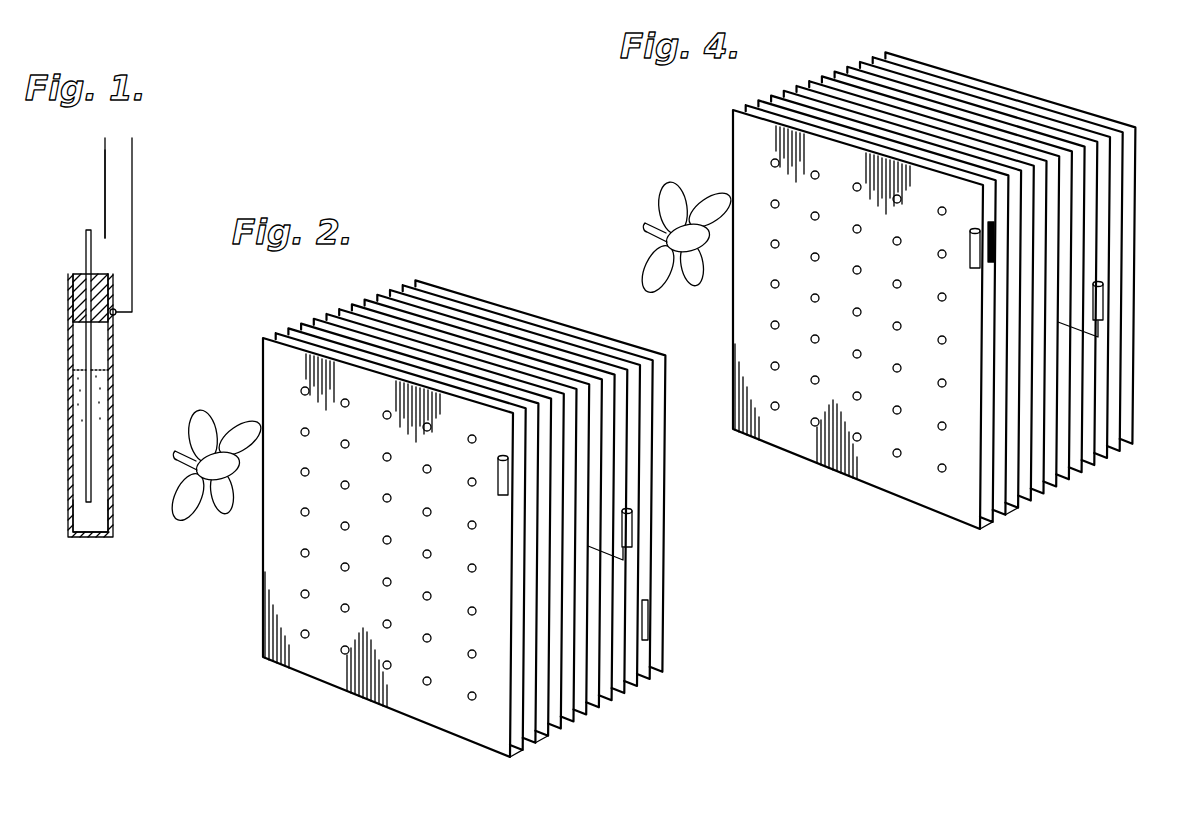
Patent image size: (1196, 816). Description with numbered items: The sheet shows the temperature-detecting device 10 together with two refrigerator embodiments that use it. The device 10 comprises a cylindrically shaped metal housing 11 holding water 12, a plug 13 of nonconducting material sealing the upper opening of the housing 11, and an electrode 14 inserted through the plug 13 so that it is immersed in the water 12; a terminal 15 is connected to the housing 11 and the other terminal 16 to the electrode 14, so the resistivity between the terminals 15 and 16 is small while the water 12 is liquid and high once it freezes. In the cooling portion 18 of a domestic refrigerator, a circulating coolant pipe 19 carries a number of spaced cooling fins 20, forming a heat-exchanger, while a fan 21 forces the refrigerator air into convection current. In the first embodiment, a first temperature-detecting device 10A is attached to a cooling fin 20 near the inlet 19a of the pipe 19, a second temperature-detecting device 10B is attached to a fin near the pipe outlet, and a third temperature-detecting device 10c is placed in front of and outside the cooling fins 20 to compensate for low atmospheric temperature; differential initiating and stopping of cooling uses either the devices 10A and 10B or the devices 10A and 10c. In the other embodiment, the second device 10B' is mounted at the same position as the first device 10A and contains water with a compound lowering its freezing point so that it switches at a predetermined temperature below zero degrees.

In FIG. 1, the temperature-detecting device 10 is at (66, 425).
In FIG. 1, the housing 11 is at (108, 513).
In FIG. 1, the water 12 is at (80, 540).
In FIG. 1, the plug 13 is at (108, 303).
In FIG. 1, the electrode 14 is at (86, 249).
In FIG. 1, the terminal 15 is at (132, 179).
In FIG. 1, the terminal 16 is at (105, 189).
In FIG. 2, the cooling portion 18 is at (519, 362).
In FIG. 4, the cooling portion 18 is at (986, 122).
In FIG. 2, the circulating coolant pipe 19 is at (382, 626).
In FIG. 4, the circulating coolant pipe 19 is at (938, 345).
In FIG. 2, the inlet 19a is at (432, 458).
In FIG. 4, the inlet 19a is at (905, 228).
In FIG. 2, the first temperature-detecting device 10A is at (500, 474).
In FIG. 4, the first temperature-detecting device 10A is at (972, 256).
In FIG. 2, the second temperature-detecting device 10B is at (684, 620).
In FIG. 4, the second temperature-detecting device 10B' is at (1051, 172).
In FIG. 2, the third temperature-detecting device 10c is at (632, 524).
In FIG. 4, the third temperature-detecting device 10c is at (1104, 304).
In FIG. 2, the cooling fins 20 is at (533, 742).
In FIG. 4, the cooling fins 20 is at (1055, 488).
In FIG. 2, the fan 21 is at (197, 490).
In FIG. 4, the fan 21 is at (667, 262).